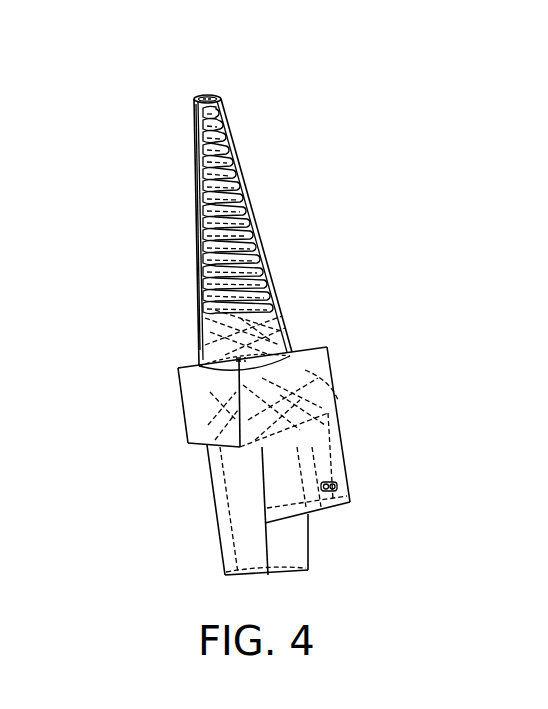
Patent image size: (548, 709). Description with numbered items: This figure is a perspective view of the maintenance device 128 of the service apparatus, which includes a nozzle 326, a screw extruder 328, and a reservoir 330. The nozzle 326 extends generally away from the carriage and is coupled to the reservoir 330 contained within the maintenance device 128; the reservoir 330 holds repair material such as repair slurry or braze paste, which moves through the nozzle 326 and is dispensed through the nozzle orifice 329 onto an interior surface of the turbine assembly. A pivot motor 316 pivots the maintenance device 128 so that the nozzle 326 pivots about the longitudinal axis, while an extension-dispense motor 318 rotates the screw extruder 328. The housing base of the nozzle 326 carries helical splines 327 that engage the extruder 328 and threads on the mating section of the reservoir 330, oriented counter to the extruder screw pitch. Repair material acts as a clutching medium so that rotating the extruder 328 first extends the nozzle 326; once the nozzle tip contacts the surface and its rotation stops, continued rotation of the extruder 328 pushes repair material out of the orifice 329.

The maintenance device 128 is at (133, 48).
The pivot motor 316 is at (348, 463).
The extension-dispense motor 318 is at (250, 498).
The nozzle 326 is at (216, 95).
The helical splines 327 is at (297, 377).
The screw extruder 328 is at (253, 190).
The nozzle orifice 329 is at (196, 94).
The reservoir 330 is at (203, 405).